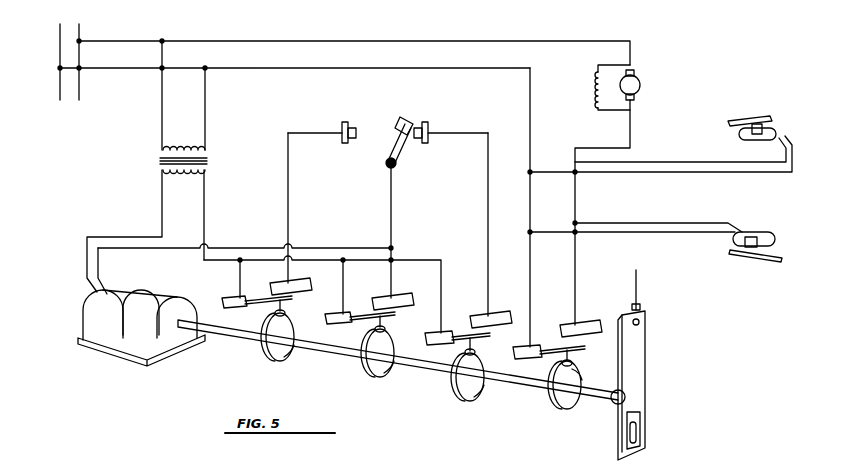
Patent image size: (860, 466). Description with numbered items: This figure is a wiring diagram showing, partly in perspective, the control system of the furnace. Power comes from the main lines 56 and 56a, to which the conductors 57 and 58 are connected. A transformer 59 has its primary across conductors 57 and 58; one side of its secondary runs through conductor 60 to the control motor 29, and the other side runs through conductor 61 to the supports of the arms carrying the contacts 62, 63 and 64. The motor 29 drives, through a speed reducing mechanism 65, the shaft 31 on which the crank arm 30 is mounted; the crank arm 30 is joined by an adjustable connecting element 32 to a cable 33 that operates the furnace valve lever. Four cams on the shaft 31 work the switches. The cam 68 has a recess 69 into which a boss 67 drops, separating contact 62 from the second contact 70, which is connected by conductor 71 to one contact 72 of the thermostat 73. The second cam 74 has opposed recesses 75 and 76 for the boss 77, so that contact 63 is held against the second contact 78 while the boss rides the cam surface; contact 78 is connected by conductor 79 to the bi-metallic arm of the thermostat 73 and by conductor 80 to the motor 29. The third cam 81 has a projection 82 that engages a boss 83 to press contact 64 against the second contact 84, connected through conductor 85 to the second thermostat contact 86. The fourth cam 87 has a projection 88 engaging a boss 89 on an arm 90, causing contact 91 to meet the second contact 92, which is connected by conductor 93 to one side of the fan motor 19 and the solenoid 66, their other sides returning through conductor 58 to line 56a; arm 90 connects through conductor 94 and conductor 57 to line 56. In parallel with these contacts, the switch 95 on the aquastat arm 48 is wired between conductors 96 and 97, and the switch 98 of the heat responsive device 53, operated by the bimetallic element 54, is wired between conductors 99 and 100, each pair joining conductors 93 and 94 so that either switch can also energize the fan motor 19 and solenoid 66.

The fan motor 19 is at (644, 89).
The control motor 29 is at (81, 314).
The crank arm 30 is at (616, 446).
The shaft 31 is at (224, 340).
The adjustable connecting element 32 is at (647, 372).
The cable 33 is at (640, 287).
The arm of the aquastat 48 is at (750, 120).
The heat responsive device 53 is at (776, 243).
The bimetallic element 54 is at (760, 262).
The main line 56 is at (58, 88).
The main line 56a is at (82, 88).
The conductor 57 is at (257, 72).
The conductor 58 is at (298, 41).
The transformer 59 is at (157, 162).
The conductor 60 is at (160, 199).
The conductor 61 is at (206, 193).
The contact 62 is at (262, 310).
The contact 63 is at (372, 316).
The contact 64 is at (472, 335).
The speed reducing mechanism 65 is at (128, 356).
The solenoid 66 is at (591, 92).
The boss 67 is at (290, 315).
The cam 68 is at (288, 355).
The recess 69 is at (270, 360).
The second contact 70 is at (297, 298).
The conductor 71 is at (290, 210).
The contact of the thermostat 72 is at (350, 121).
The thermostat 73 is at (380, 160).
The second cam 74 is at (394, 373).
The recess 75 is at (382, 374).
The recess 76 is at (390, 336).
The boss 77 is at (350, 330).
The second contact 78 is at (402, 312).
The conductor 79 is at (393, 243).
The conductor 80 is at (342, 250).
The third cam 81 is at (484, 398).
The projection 82 is at (460, 397).
The boss 83 is at (452, 348).
The second contact 84 is at (492, 325).
The conductor 85 is at (490, 259).
The second contact of the thermostat 86 is at (428, 121).
The fourth cam 87 is at (563, 404).
The projection 88 is at (582, 370).
The boss 89 is at (575, 357).
The arm 90 is at (540, 362).
The contact 91 is at (556, 350).
The second contact 92 is at (584, 331).
The conductor 93 is at (577, 278).
The conductor 94 is at (532, 278).
The switch 95 is at (778, 130).
The conductor 96 is at (705, 158).
The conductor 97 is at (698, 178).
The switch 98 is at (756, 236).
The conductor 99 is at (660, 226).
The conductor 100 is at (654, 236).